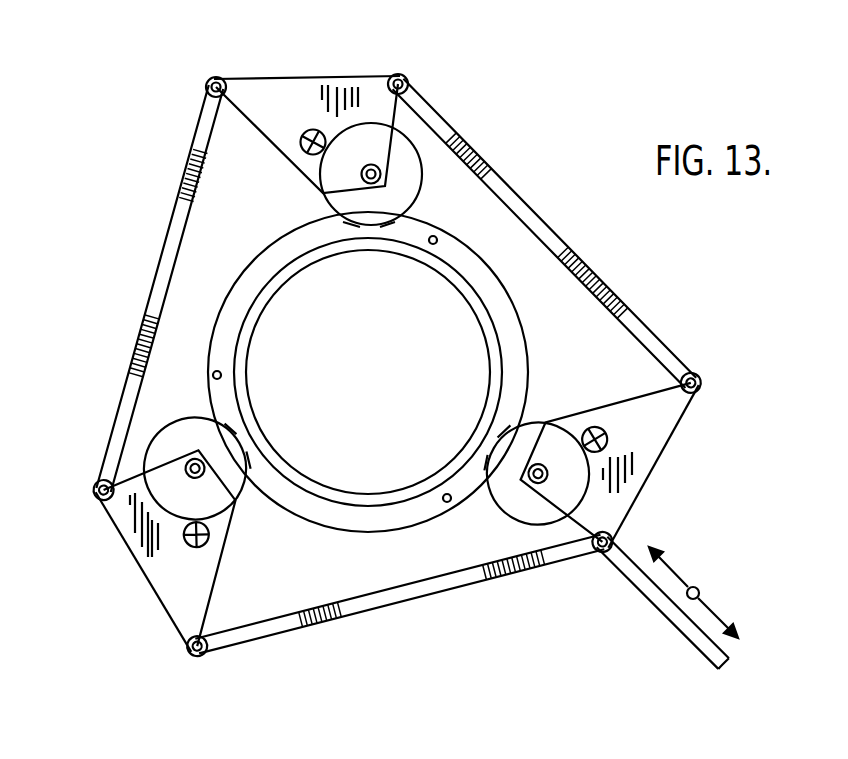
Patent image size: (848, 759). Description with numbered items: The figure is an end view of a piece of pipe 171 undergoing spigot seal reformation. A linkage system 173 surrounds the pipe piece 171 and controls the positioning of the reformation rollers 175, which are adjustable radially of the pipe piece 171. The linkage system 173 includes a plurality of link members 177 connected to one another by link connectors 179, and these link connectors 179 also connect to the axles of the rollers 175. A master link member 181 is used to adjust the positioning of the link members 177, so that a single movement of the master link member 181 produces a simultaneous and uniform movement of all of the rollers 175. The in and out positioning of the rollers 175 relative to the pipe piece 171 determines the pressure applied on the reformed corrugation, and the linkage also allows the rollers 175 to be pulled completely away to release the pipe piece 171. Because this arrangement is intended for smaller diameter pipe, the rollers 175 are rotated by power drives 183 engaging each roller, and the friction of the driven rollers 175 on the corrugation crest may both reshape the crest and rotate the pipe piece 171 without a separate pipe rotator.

The piece of pipe 171 is at (303, 522).
The linkage system 173 is at (425, 608).
The reformation rollers 175 is at (408, 172).
The link members 177 is at (518, 186).
The link connectors 179 is at (342, 80).
The master link member 181 is at (655, 600).
The power drives 183 is at (312, 131).